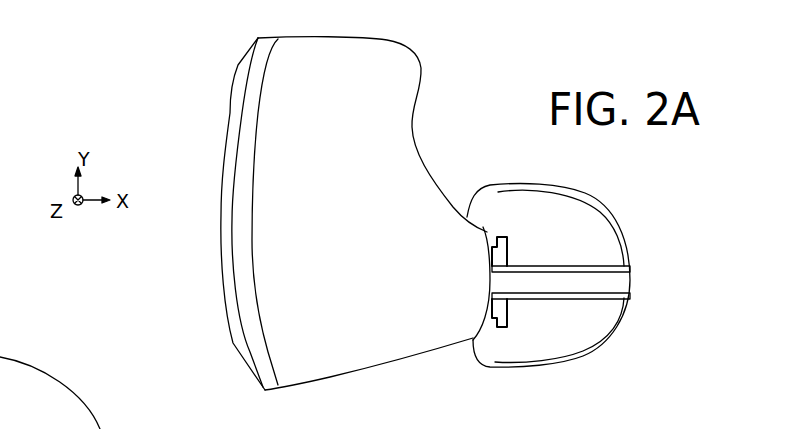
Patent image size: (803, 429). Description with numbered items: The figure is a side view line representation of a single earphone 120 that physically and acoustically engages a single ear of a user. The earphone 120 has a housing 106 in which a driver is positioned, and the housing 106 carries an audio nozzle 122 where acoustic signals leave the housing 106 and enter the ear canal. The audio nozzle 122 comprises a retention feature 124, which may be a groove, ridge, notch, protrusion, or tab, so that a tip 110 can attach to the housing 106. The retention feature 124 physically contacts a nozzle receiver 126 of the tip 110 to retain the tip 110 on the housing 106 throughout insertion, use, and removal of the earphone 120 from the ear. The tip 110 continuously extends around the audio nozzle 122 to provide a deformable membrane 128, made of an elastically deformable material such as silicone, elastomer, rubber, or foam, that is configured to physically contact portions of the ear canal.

The earphone 120 is at (139, 46).
The housing 106 is at (398, 81).
The tip 110 is at (631, 242).
The audio nozzle 122 is at (482, 347).
The retention feature 124 is at (492, 267).
The nozzle receiver 126 is at (501, 239).
The deformable membrane 128 is at (582, 357).